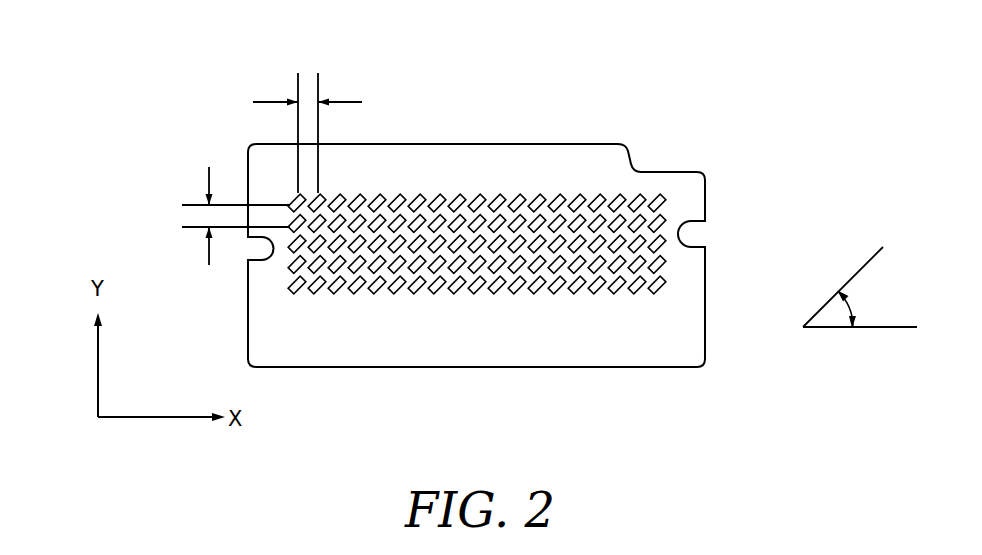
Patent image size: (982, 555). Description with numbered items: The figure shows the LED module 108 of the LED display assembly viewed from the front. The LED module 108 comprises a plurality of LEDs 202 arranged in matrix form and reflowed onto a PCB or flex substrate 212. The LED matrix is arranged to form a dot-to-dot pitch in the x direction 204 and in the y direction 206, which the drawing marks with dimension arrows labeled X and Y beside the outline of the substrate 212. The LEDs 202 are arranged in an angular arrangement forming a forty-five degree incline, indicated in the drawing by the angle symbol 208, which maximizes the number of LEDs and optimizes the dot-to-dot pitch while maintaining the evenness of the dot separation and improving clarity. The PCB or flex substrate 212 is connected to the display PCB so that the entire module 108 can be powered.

The LED module 108 is at (456, 239).
The LEDs 202 is at (633, 196).
The dot to dot pitch in x direction 204 is at (318, 62).
The dot to dot pitch in y direction 206 is at (160, 217).
The aperture orientation angle 208 is at (975, 324).
The PCB or flex substrate 212 is at (595, 143).